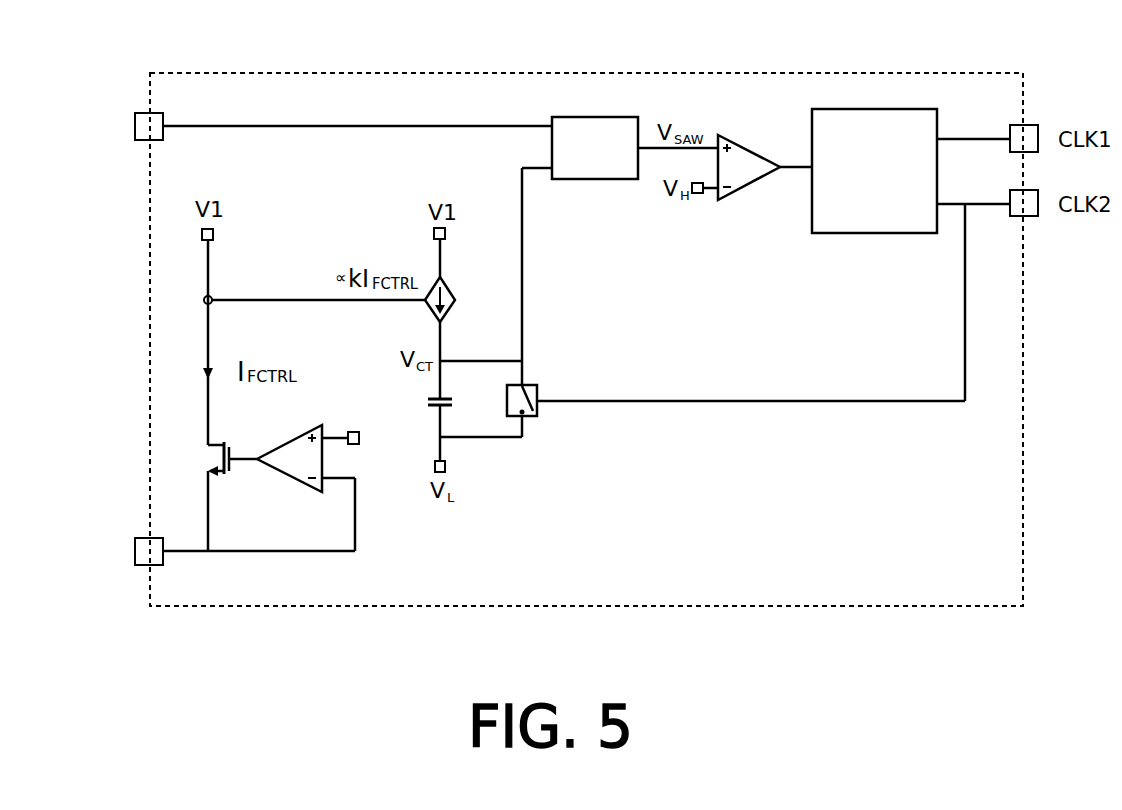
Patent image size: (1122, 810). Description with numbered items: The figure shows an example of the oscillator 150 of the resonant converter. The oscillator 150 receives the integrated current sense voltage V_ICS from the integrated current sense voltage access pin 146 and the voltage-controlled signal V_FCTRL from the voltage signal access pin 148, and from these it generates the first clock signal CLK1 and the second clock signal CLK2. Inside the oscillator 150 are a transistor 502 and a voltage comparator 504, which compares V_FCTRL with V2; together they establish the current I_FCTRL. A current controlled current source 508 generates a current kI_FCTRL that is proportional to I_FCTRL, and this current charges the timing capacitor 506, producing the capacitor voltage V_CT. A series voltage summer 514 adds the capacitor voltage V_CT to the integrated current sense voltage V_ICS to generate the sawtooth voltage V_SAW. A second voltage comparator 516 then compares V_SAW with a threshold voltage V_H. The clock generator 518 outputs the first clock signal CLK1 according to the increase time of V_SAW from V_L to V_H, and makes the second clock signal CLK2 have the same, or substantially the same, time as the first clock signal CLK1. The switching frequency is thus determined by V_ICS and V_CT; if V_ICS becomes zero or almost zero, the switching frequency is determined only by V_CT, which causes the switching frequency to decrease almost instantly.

The oscillator 150 is at (100, 29).
The integrated current sense voltage access pin 146 is at (138, 141).
The voltage signal access pin 148 is at (137, 566).
The transistor 502 is at (228, 450).
The voltage comparator 504 is at (292, 478).
The timing capacitor 506 is at (452, 402).
The current controlled current source 508 is at (450, 287).
The series voltage summer 514 is at (600, 179).
The voltage comparator 516 is at (748, 143).
The clock generator 518 is at (862, 233).